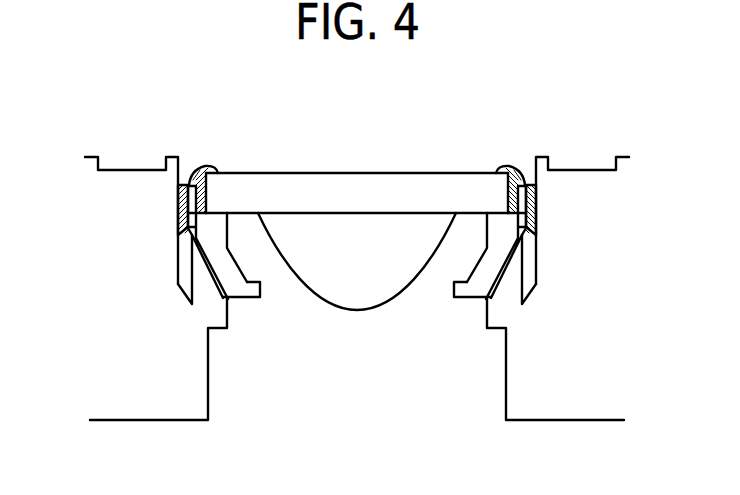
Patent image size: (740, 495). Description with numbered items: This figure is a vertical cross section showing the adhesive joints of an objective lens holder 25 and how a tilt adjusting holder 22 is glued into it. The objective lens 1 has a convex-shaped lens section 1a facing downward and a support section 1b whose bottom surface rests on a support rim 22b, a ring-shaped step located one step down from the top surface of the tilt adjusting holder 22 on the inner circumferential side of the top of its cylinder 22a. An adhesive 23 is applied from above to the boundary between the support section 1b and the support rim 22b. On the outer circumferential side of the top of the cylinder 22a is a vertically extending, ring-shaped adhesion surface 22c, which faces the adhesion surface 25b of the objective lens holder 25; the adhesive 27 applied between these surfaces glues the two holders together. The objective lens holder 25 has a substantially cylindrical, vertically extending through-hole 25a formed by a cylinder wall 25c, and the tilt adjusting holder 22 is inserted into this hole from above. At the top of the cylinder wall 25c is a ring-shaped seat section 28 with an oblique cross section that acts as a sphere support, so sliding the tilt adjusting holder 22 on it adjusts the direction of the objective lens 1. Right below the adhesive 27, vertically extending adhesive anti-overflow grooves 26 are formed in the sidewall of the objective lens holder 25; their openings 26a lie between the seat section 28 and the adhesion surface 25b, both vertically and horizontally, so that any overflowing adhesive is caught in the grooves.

The objective lens 1 is at (392, 185).
The lens section 1a is at (357, 261).
The support section 1b is at (212, 188).
The tilt adjusting holder 22 is at (237, 287).
The cylinder 22a is at (452, 268).
The support rim 22b is at (212, 214).
The adhesion surface 22c is at (222, 216).
The adhesive 23 is at (196, 169).
The objective lens holder 25 is at (357, 288).
The through-hole 25a is at (358, 405).
The adhesion surface 25b is at (180, 211).
The cylinder wall 25c is at (208, 370).
The adhesive anti-overflow groove 26 is at (180, 288).
The opening 26a is at (185, 243).
The adhesive 27 is at (182, 191).
The seat section 28 is at (212, 285).